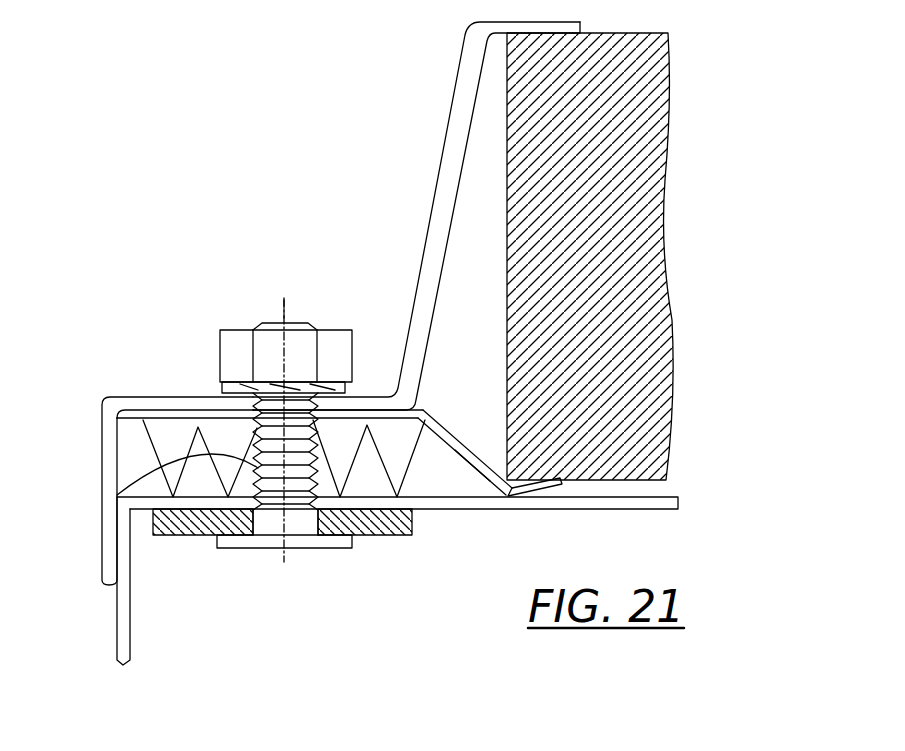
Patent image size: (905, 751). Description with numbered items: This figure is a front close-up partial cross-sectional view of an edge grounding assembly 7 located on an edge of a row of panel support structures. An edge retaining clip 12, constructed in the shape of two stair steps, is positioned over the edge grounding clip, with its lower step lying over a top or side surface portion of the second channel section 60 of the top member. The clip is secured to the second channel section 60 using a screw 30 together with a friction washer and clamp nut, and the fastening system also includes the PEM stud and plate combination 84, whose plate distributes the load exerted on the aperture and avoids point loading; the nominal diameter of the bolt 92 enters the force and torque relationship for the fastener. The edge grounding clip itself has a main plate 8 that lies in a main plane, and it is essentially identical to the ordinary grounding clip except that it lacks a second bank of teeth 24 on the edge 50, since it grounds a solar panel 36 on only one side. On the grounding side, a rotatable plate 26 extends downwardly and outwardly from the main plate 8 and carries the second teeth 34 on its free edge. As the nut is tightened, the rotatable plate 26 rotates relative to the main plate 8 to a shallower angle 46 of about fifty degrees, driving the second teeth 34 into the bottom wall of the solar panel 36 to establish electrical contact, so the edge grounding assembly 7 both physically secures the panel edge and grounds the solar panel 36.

The edge grounding assembly 7 is at (258, 252).
The main plate 8 is at (354, 408).
The edge retaining clip 12 is at (437, 182).
The second bank of teeth 24 is at (448, 474).
The rotatable plate 26 is at (486, 468).
The screw 30 is at (120, 493).
The second teeth 34 is at (546, 494).
The solar panel 36 is at (507, 299).
The shallower angle 46 is at (465, 448).
The edge 50 is at (102, 439).
The second channel section 60 is at (660, 498).
The PEM stud and plate combination 84 is at (370, 535).
The nominal diameter of bolt 92 is at (338, 326).